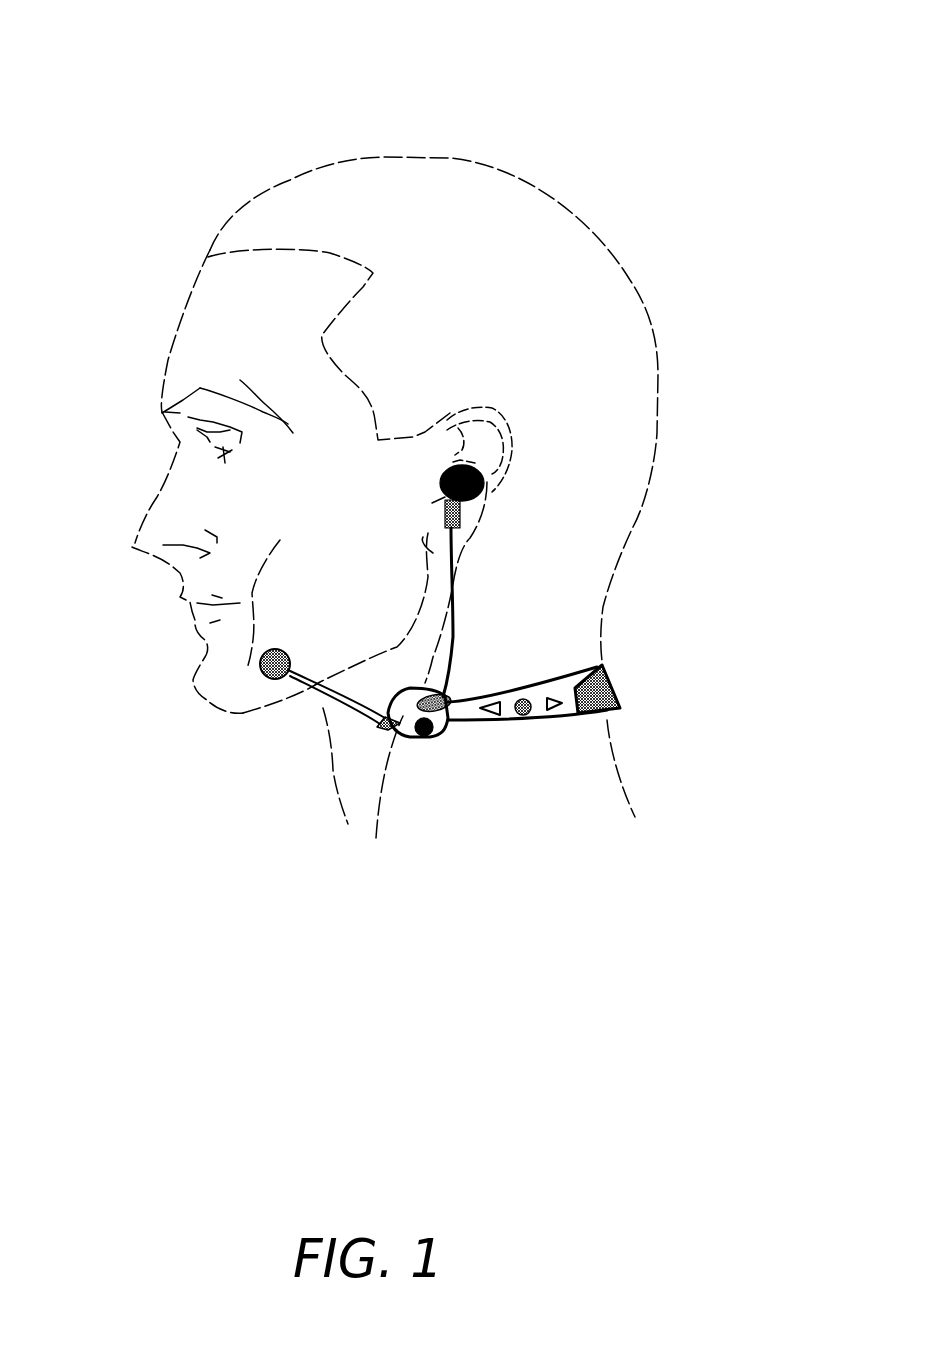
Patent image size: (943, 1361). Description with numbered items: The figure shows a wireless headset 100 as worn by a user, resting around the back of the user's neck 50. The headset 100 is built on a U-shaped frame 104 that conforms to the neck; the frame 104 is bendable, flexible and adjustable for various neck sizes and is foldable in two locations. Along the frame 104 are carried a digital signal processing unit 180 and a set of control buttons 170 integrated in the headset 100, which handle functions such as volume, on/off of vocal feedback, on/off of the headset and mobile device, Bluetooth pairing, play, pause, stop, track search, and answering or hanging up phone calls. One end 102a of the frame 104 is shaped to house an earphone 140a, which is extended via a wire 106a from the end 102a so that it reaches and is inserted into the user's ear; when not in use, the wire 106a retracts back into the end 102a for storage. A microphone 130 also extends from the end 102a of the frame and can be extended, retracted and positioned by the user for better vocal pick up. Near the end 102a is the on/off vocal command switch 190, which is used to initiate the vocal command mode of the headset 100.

The wireless headset 100 is at (108, 52).
The neck 50 is at (580, 790).
The end of the U-shaped frame 102a is at (448, 720).
The U-shaped frame 104 is at (550, 684).
The wire 106a is at (453, 588).
The microphone 130 is at (313, 685).
The earphone 140a is at (492, 488).
The control buttons 170 is at (520, 697).
The digital signal processing unit 180 is at (620, 697).
The vocal command switch 190 is at (425, 740).